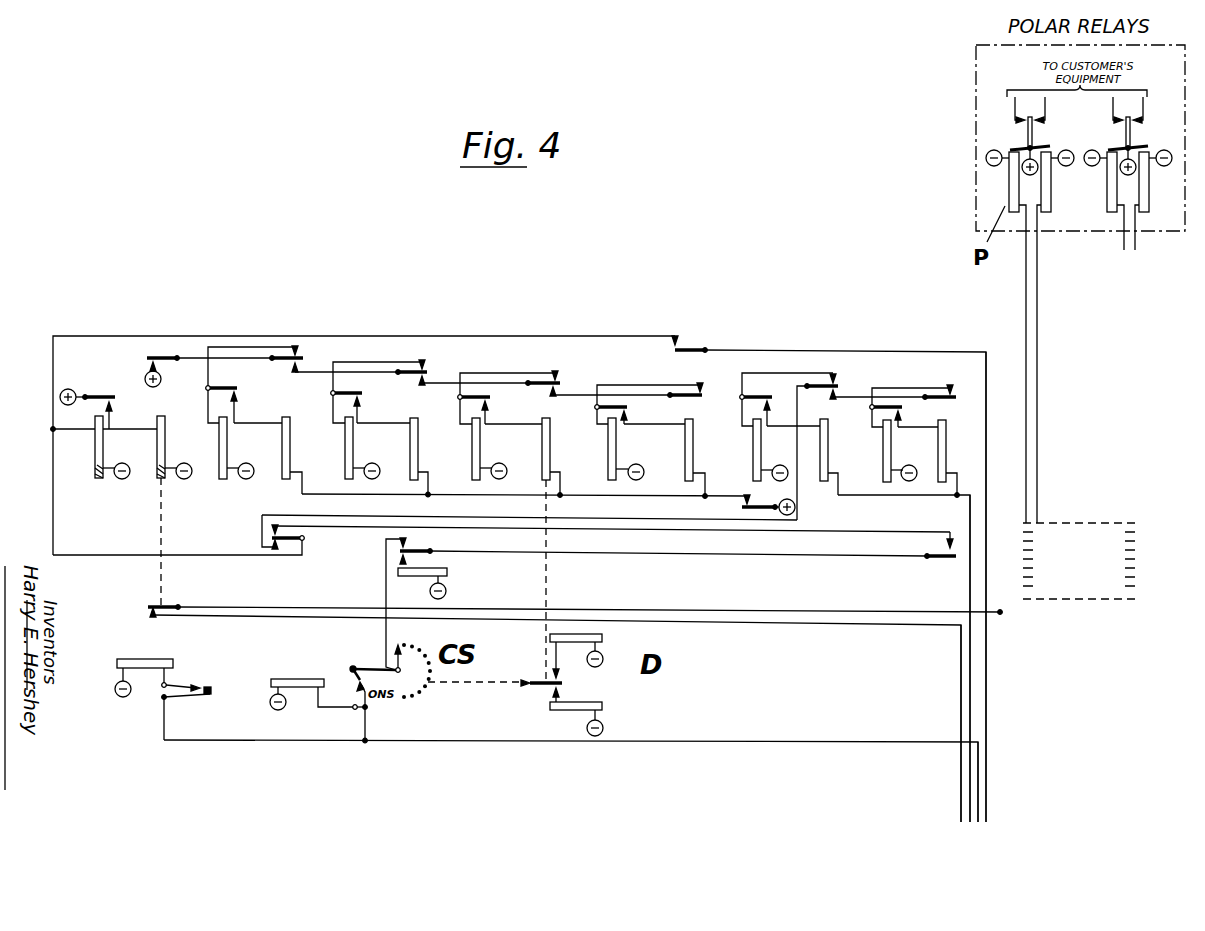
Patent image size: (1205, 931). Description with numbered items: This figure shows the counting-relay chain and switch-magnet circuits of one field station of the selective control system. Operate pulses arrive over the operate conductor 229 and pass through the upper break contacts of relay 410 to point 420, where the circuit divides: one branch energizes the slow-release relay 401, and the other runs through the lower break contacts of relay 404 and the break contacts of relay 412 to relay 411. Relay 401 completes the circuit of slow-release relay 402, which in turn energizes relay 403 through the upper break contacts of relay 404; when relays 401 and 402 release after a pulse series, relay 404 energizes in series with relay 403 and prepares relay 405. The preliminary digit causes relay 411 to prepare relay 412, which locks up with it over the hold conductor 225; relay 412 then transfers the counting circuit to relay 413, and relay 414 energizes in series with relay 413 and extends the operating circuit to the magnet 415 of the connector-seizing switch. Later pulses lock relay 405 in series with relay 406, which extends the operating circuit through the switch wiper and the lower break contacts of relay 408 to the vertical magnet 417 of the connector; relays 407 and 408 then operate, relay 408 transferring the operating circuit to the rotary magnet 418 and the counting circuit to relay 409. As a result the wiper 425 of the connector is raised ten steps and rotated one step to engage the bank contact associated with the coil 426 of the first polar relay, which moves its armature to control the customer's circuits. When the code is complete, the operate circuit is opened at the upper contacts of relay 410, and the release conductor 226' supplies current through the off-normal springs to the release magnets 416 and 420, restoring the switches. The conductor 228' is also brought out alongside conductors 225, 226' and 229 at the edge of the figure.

The slow-release relay 401 is at (95, 450).
The slow-release relay 402 is at (157, 450).
The counting relay 403 is at (219, 450).
The counting relay 404 is at (282, 450).
The counting relay 405 is at (345, 450).
The counting relay 406 is at (410, 450).
The counting relay 407 is at (472, 450).
The counting relay 408 is at (542, 450).
The counting relay 409 is at (608, 451).
The counting relay 410 is at (685, 451).
The preliminary-digit counting relay 411 is at (753, 451).
The preliminary-digit counting relay 412 is at (828, 451).
The preliminary-digit counting relay 413 is at (891, 451).
The preliminary-digit counting relay 414 is at (946, 452).
The magnet of connector-seizing switch 415 is at (447, 572).
The release magnet 416 is at (304, 679).
The vertical magnet 417 is at (602, 705).
The rotary magnet 418 is at (602, 637).
The release magnet / circuit dividing point 420 is at (53, 429).
The wiper of the connector 425 is at (1002, 613).
The coil of the first polar relay 426 is at (1009, 186).
The hold conductor 225 is at (970, 773).
The release conductor 226' is at (1009, 782).
The conductor 228' is at (1000, 723).
The operate conductor 229 is at (986, 806).